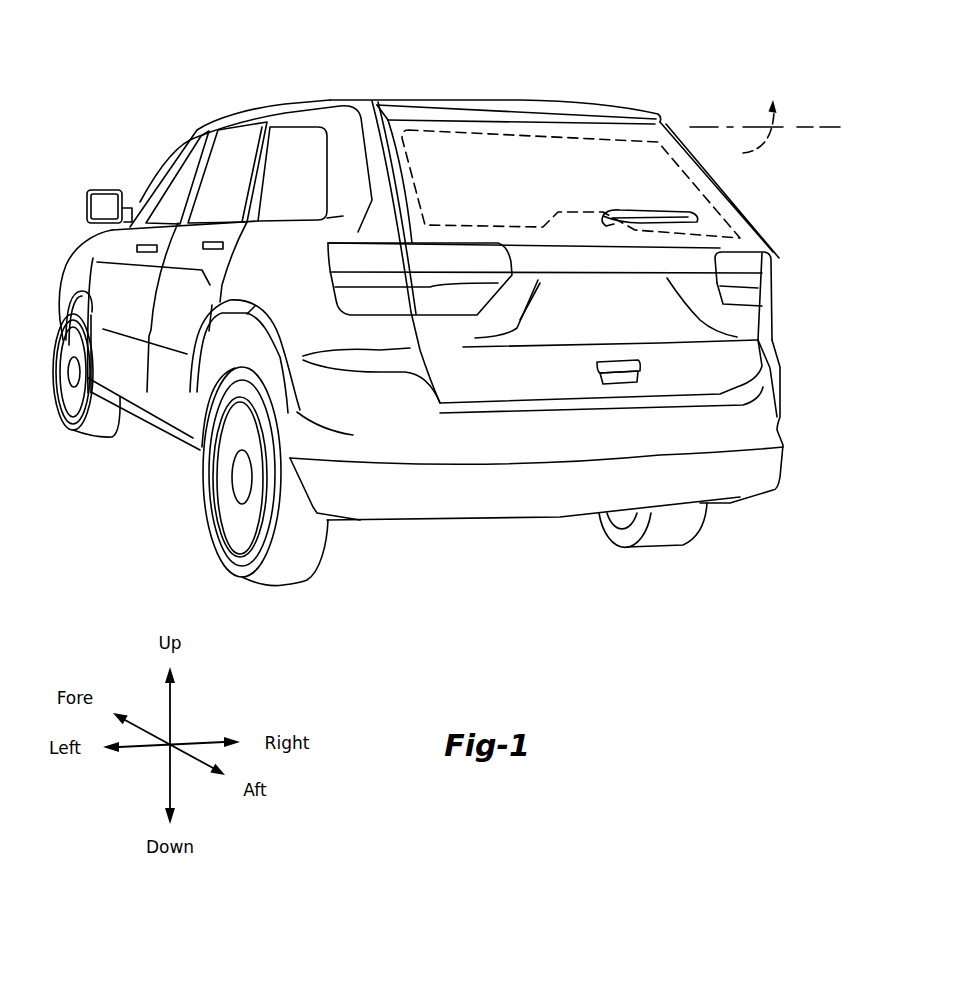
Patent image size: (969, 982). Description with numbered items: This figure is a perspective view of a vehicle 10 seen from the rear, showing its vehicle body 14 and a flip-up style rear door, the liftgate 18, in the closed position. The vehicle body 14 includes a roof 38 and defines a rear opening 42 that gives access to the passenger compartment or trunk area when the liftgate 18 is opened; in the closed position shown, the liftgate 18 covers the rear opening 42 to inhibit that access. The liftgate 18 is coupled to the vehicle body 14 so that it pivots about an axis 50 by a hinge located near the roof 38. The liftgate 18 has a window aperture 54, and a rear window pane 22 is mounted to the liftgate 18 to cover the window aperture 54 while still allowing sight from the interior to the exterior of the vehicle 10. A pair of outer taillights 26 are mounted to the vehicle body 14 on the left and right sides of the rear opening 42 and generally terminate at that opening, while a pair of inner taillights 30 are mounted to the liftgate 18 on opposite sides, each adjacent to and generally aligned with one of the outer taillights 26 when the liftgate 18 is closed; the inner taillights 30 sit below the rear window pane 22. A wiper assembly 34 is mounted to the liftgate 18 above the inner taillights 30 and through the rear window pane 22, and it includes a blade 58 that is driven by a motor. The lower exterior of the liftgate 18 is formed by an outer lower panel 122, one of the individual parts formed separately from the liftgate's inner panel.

The vehicle 10 is at (178, 88).
The vehicle body 14 is at (330, 122).
The liftgate 18 is at (742, 329).
The rear window pane 22 is at (478, 150).
The outer taillights 26 is at (340, 260).
The inner taillights 30 is at (444, 313).
The wiper assembly 34 is at (608, 198).
The roof 38 is at (347, 101).
The rear opening 42 is at (393, 185).
The axis 50 is at (802, 127).
The window aperture 54 is at (567, 138).
The blade 58 is at (660, 213).
The outer lower panel 122 is at (690, 377).